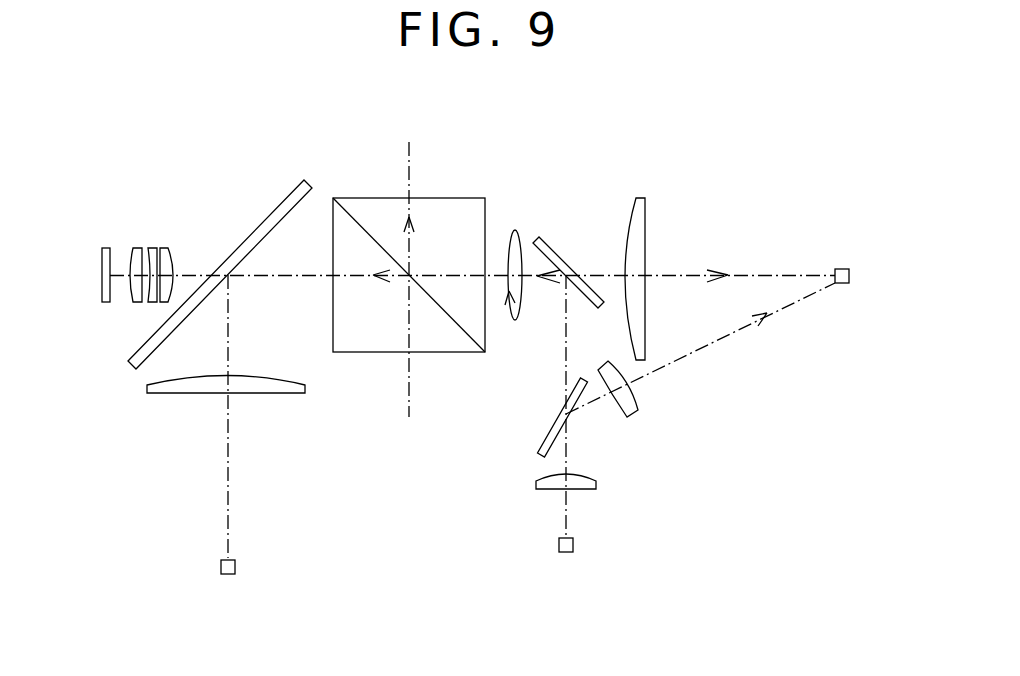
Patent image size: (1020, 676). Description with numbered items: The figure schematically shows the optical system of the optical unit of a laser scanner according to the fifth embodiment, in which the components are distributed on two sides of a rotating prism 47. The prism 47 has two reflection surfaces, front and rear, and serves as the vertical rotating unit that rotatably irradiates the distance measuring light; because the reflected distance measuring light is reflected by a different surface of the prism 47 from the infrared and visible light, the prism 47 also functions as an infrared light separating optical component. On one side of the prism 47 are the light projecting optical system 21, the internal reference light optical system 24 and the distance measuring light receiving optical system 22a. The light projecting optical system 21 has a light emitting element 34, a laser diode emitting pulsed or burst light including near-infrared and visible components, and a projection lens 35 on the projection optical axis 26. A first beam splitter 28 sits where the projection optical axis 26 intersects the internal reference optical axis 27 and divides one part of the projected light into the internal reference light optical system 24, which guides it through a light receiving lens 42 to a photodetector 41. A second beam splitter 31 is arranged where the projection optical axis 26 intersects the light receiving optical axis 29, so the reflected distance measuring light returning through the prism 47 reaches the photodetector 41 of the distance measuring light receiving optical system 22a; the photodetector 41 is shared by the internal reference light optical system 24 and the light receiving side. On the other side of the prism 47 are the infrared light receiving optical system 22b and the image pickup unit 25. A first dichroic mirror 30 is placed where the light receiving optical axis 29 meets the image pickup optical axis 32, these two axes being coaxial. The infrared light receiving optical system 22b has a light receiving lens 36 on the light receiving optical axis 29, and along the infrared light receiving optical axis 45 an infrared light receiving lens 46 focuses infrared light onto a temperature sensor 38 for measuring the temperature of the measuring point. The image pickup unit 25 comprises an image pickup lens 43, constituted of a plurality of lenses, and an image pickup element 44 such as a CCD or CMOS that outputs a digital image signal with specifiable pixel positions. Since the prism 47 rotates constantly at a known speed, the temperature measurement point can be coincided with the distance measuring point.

The light projecting optical system 21 is at (500, 472).
The distance measuring light receiving optical system 22a is at (822, 238).
The infrared light receiving optical system 22b is at (182, 466).
The internal reference light optical system 24 is at (720, 380).
The image pickup unit 25 is at (117, 320).
The projection optical axis 26 is at (562, 512).
The internal reference optical axis 27 is at (740, 328).
The first beam splitter 28 is at (552, 425).
The light receiving optical axis 29 is at (773, 275).
The first dichroic mirror 30 is at (260, 220).
The second beam splitter 31 is at (561, 250).
The image pickup optical axis 32 is at (188, 273).
The light emitting element 34 is at (575, 545).
The projection lens 35 is at (598, 480).
The light receiving lens 36 is at (647, 228).
The temperature sensor 38 is at (237, 567).
The photodetector 41 is at (843, 269).
The light receiving lens 42 is at (630, 417).
The image pickup lens 43 is at (156, 236).
The image pickup element 44 is at (107, 247).
The infrared light receiving optical axis 45 is at (229, 480).
The infrared light receiving lens 46 is at (277, 395).
The prism 47 is at (444, 198).